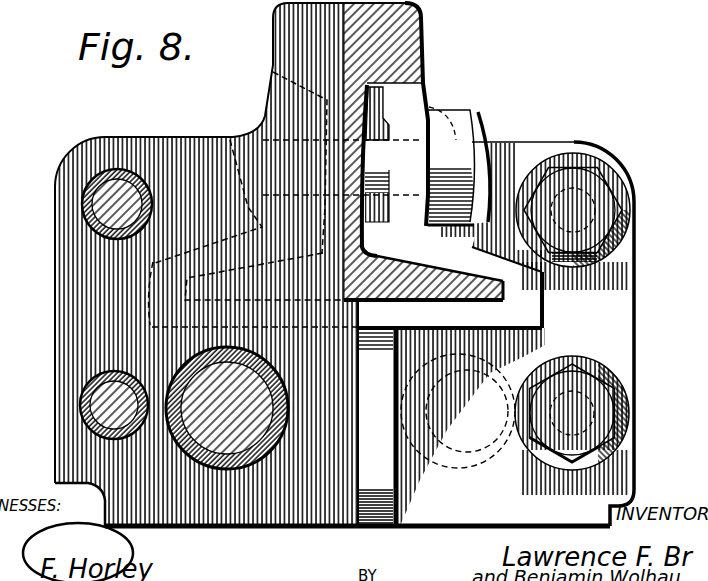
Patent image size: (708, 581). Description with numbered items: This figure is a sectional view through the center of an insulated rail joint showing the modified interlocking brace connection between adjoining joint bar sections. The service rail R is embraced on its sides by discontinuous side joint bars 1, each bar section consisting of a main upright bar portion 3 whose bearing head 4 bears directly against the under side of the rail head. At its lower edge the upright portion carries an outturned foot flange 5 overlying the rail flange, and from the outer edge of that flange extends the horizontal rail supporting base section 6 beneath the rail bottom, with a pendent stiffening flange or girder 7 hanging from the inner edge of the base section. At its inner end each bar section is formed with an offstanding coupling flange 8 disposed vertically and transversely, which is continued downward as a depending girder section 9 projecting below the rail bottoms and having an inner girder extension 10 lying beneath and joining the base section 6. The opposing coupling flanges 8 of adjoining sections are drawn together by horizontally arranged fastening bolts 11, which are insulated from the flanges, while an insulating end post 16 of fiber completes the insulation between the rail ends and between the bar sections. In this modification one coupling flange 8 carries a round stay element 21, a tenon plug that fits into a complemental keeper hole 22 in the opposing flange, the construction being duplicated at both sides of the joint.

The side joint bar 1 is at (417, 133).
The main upright bar portion 3 is at (376, 167).
The bearing head 4 is at (385, 111).
The outturned foot flange 5 is at (494, 260).
The rail supporting base section 6 is at (450, 301).
The pendent stiffening flange or girder 7 is at (377, 427).
The coupling flange 8 is at (530, 147).
The depending girder section 9 is at (604, 334).
The inner girder extension 10 is at (471, 427).
The fastening bolt 11 is at (107, 204).
The insulating end post 16 is at (193, 153).
The stay element 21 is at (218, 438).
The keeper hole 22 is at (193, 462).
The service rail R is at (271, 21).